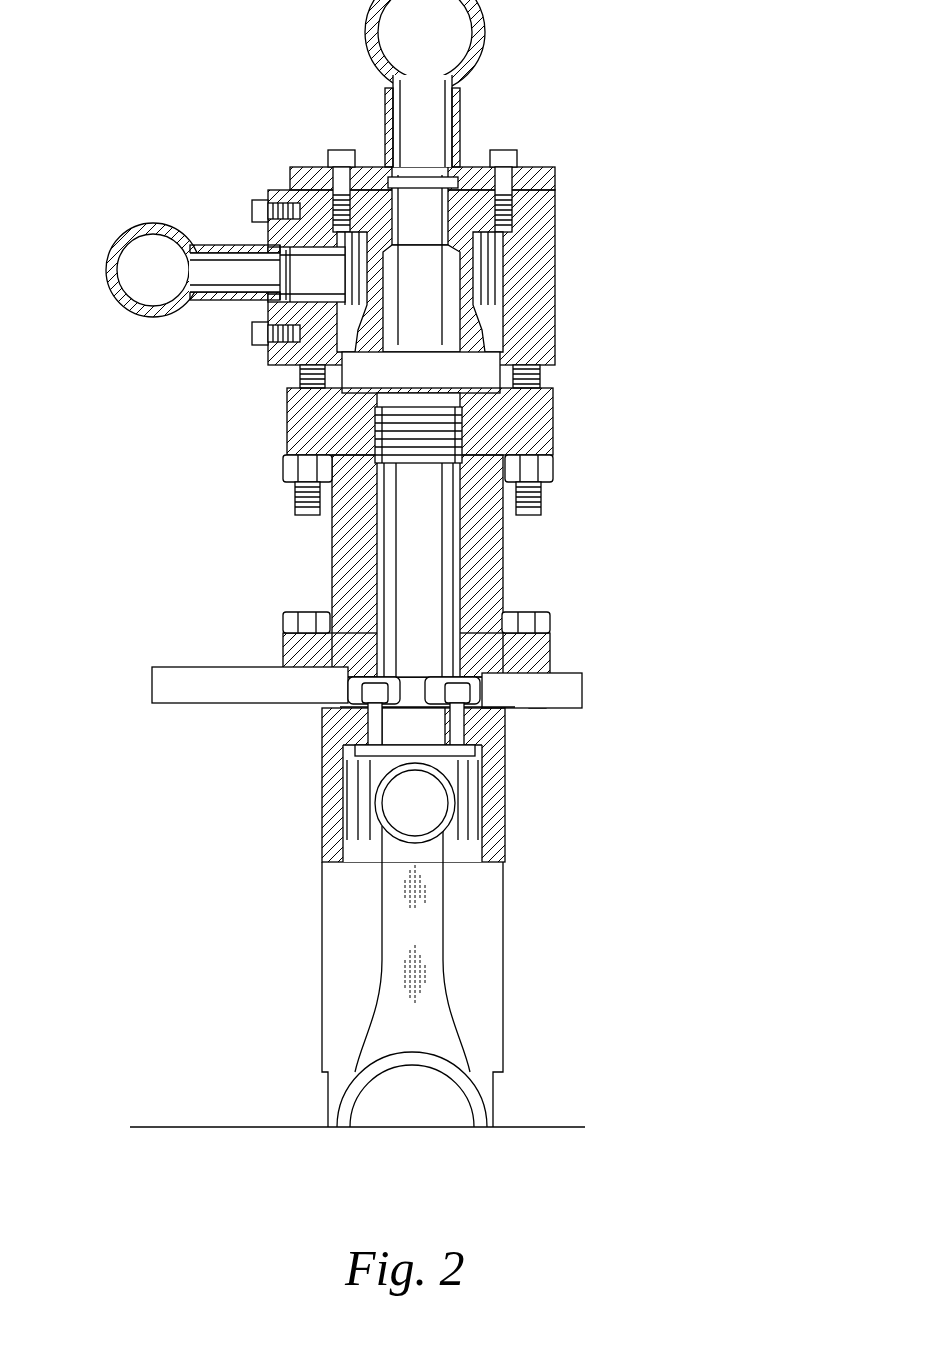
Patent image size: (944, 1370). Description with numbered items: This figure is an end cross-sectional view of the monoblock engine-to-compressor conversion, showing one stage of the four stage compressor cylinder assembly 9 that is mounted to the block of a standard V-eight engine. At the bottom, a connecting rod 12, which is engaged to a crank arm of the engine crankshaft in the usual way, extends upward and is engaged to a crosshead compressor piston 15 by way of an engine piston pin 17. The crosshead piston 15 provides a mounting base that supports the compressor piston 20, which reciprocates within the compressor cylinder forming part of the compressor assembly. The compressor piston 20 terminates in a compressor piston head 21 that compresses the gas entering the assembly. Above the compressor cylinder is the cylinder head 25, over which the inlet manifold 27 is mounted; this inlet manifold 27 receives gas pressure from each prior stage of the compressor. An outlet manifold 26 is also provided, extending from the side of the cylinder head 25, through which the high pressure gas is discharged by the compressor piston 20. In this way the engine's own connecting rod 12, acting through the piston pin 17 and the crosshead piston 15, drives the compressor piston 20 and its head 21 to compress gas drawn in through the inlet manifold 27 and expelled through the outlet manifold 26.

The inlet manifold 27 is at (502, 48).
The outlet manifold 26 is at (123, 222).
The cylinder head 25 is at (571, 280).
The compressor piston head 21 is at (462, 430).
The four stage compressor cylinder assembly 9 is at (273, 433).
The compressor piston 20 is at (446, 590).
The engine piston pin 17 is at (372, 803).
The crosshead compressor piston 15 is at (521, 757).
The connecting rod 12 is at (382, 960).